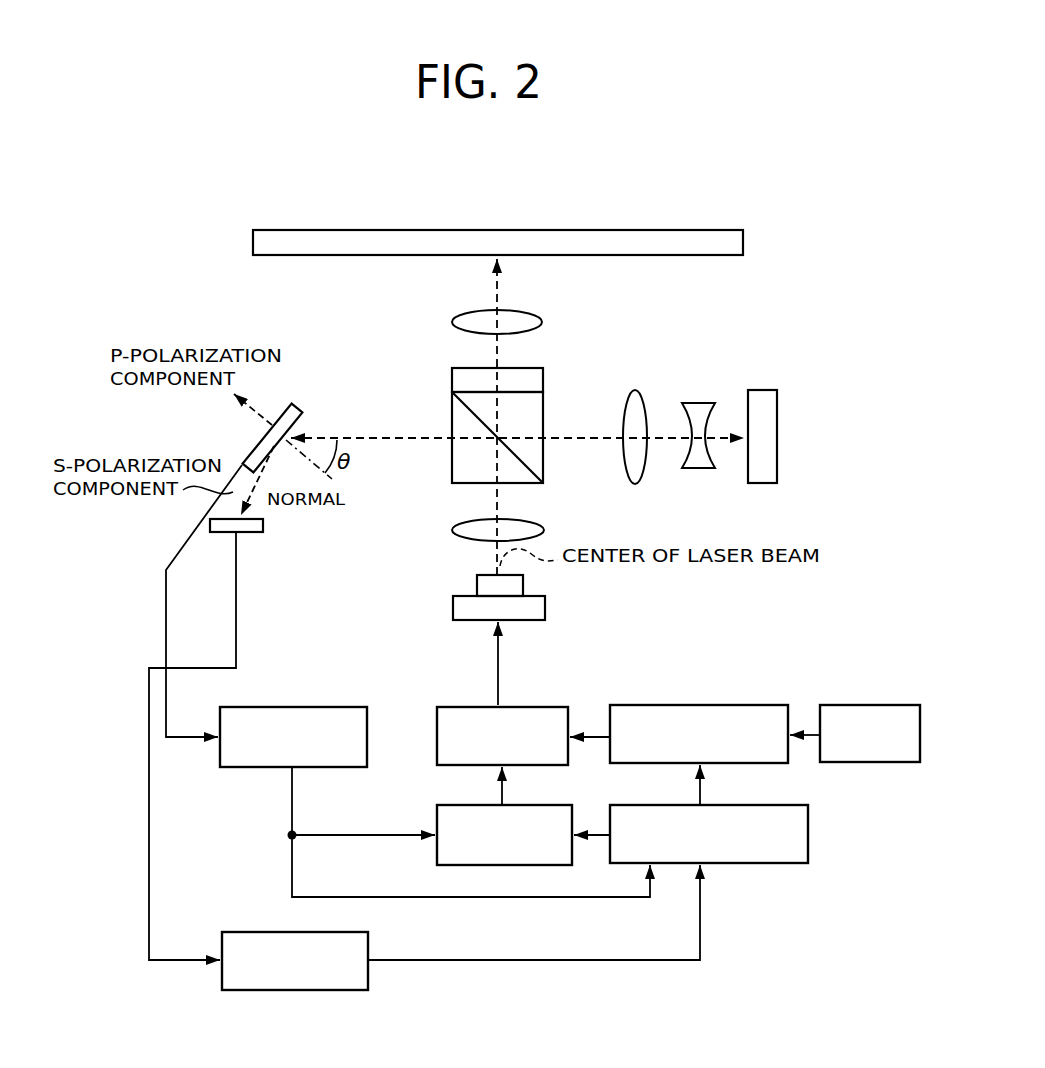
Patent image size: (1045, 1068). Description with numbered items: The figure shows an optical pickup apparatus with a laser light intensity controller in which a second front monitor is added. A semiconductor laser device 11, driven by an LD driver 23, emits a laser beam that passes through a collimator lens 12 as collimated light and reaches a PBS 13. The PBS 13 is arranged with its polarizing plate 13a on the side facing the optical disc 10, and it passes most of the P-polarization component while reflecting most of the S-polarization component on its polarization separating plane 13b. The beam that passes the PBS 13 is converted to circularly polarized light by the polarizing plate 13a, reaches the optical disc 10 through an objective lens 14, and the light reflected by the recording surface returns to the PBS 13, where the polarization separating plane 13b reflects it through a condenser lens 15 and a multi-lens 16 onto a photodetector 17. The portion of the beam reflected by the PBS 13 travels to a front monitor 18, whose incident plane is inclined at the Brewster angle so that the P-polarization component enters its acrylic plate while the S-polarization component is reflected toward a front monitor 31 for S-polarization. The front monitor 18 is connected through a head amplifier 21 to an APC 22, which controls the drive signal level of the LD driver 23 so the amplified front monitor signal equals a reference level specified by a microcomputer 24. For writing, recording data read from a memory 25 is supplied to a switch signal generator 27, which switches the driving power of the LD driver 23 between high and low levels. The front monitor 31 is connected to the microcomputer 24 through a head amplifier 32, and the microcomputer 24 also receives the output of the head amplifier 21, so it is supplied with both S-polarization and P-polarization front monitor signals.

The optical disc 10 is at (688, 229).
The semiconductor laser device 11 is at (546, 605).
The collimator lens 12 is at (543, 530).
The PBS (polarizing beam splitter) 13 is at (452, 463).
The polarizing plate 13a is at (458, 368).
The polarization separating plane 13b is at (530, 452).
The objective lens 14 is at (541, 320).
The condenser lens 15 is at (636, 391).
The multi-lens 16 is at (700, 402).
The photodetector 17 is at (766, 390).
The front monitor 18 is at (292, 404).
The head amplifier 21 is at (300, 707).
The APC (automatic power controller) 22 is at (437, 812).
The LD driver 23 is at (473, 707).
The microcomputer 24 is at (810, 822).
The memory 25 is at (860, 705).
The switch signal generator 27 is at (705, 705).
The front monitor for S-polarization 31 is at (258, 533).
The head amplifier 32 is at (265, 932).